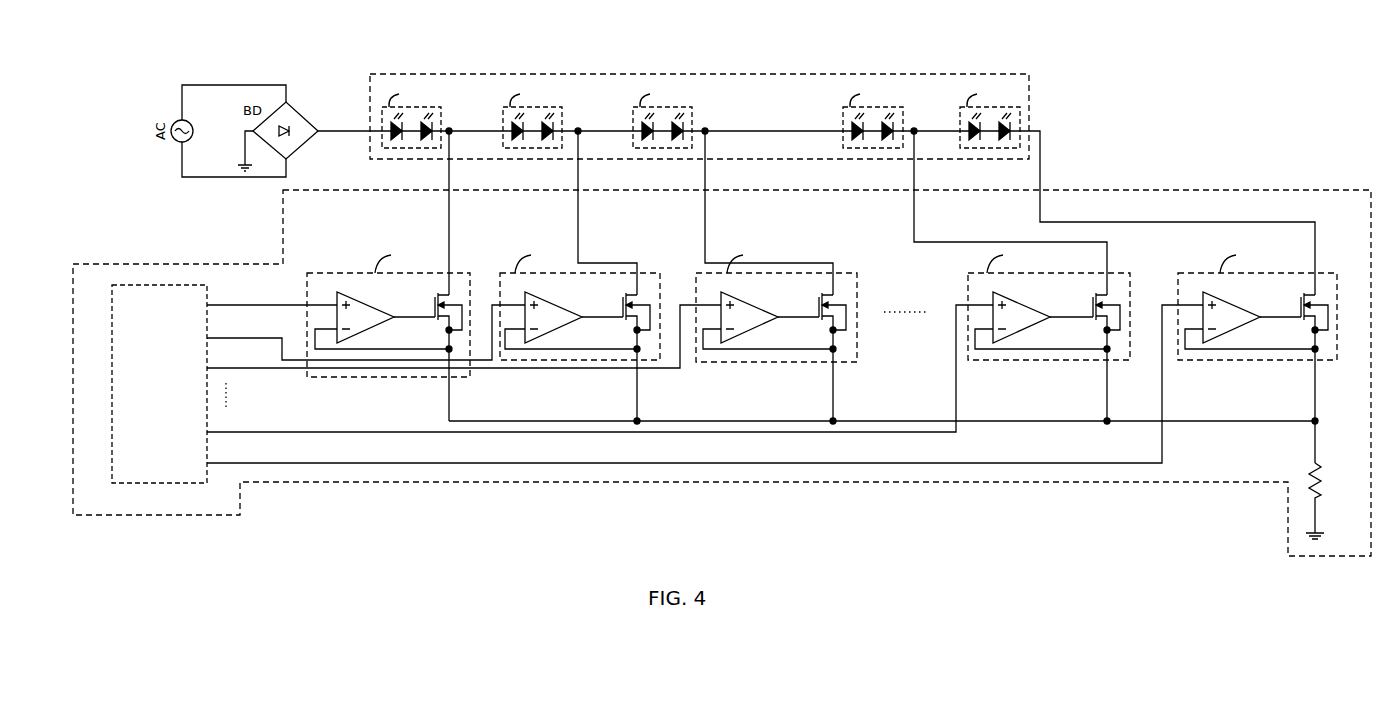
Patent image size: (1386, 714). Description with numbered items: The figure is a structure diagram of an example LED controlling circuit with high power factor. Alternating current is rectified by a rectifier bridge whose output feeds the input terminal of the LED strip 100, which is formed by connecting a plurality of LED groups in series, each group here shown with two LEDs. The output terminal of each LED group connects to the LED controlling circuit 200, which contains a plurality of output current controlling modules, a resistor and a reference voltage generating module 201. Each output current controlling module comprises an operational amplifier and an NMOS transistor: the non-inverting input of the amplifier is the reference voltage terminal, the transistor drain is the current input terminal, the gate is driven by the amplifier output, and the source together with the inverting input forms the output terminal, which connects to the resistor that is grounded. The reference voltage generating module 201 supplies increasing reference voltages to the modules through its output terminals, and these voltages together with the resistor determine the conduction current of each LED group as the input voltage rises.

The LED strip 100 is at (873, 74).
The LED controlling circuit 200 is at (1080, 190).
The reference voltage generating module 201 is at (112, 380).